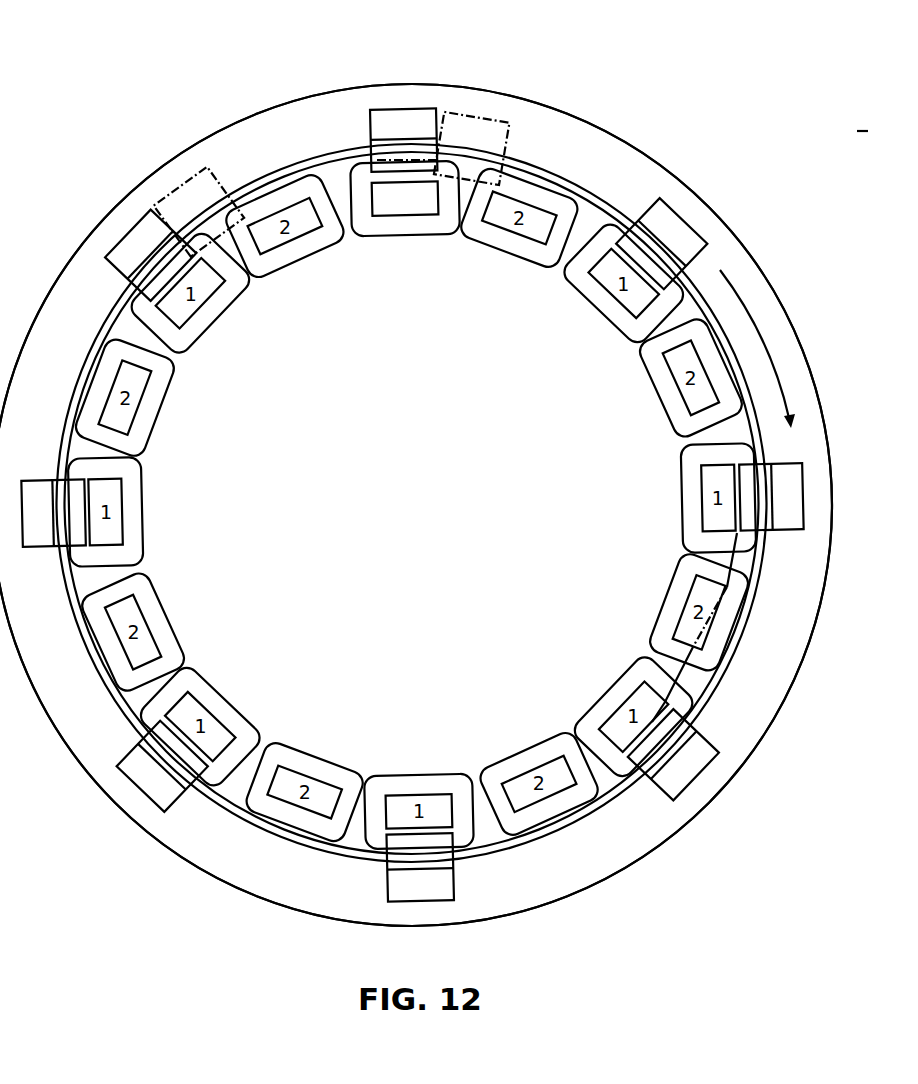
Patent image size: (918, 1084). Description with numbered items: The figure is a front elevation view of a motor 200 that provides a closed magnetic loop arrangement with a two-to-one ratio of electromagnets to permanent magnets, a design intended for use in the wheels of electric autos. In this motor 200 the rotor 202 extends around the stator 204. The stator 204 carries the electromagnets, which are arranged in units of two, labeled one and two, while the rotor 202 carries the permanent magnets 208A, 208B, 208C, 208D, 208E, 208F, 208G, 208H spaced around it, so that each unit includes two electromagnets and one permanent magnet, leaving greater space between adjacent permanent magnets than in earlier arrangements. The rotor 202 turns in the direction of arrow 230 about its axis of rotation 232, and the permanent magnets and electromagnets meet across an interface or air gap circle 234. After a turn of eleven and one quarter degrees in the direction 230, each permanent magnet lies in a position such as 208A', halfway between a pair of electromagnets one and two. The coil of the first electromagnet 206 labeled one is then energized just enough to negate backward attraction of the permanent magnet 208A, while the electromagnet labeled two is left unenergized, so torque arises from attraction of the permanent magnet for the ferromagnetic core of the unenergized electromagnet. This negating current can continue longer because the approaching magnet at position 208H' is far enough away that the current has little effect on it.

The motor 200 is at (238, 80).
The rotor 202 is at (440, 82).
The stator 204 is at (205, 192).
The electromagnet 206 is at (402, 245).
The permanent magnet 208A is at (398, 111).
The permanent magnet position 208A' is at (476, 125).
The permanent magnet 208B is at (680, 214).
The permanent magnet 208C is at (805, 494).
The permanent magnet 208D is at (700, 766).
The permanent magnet 208E is at (457, 877).
The permanent magnet 208F is at (137, 788).
The permanent magnet 208G is at (23, 507).
The permanent magnet 208H is at (126, 249).
The approaching permanent magnet position 208H' is at (168, 208).
The direction of rotation 230 is at (750, 308).
The axis of rotation 232 is at (398, 501).
The air gap circle 234 is at (728, 561).